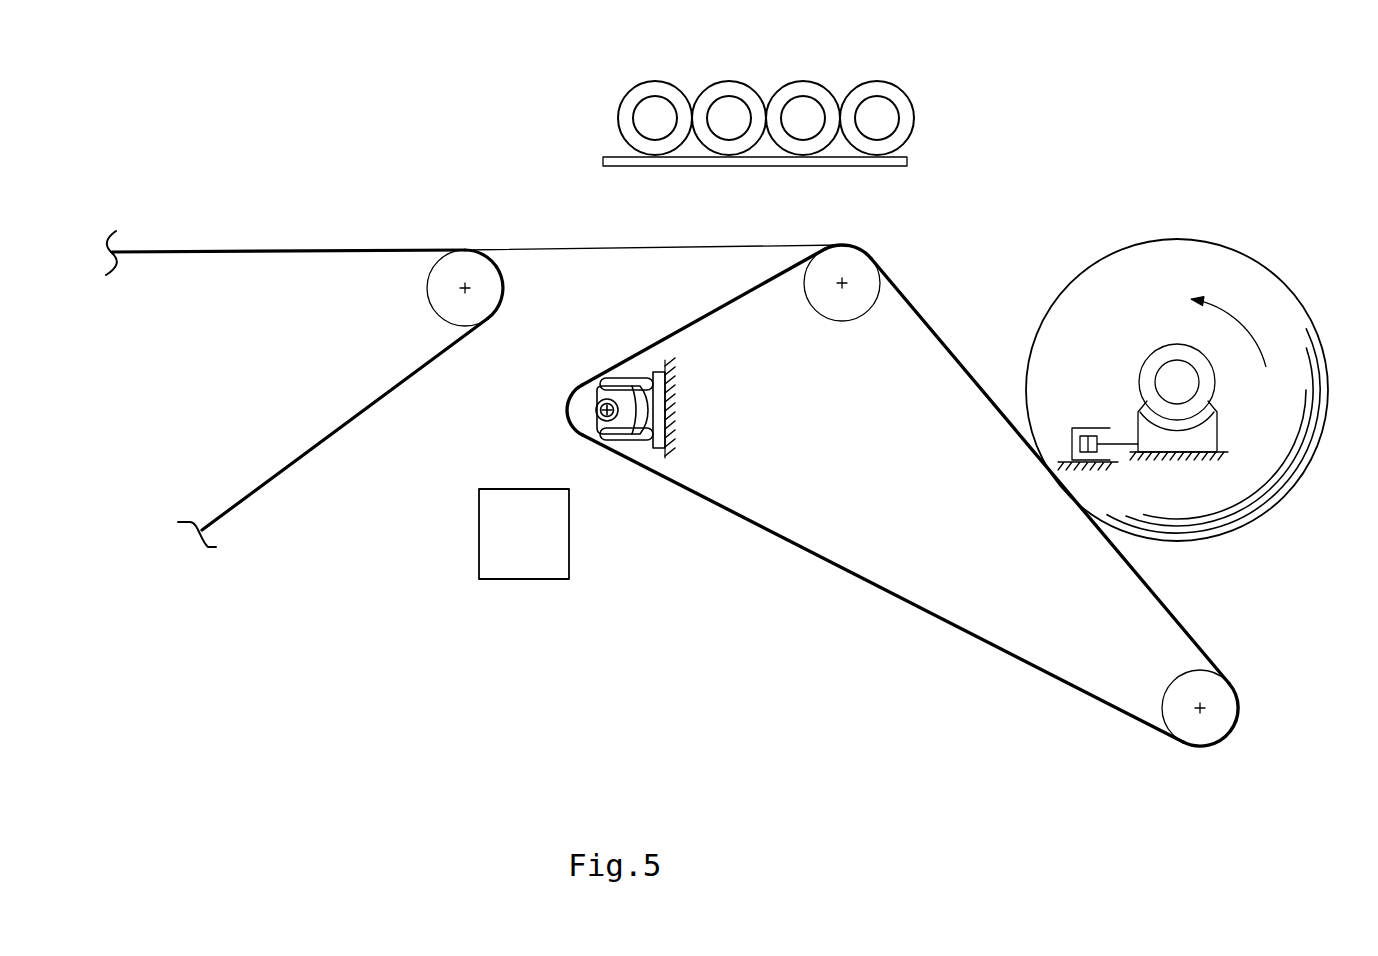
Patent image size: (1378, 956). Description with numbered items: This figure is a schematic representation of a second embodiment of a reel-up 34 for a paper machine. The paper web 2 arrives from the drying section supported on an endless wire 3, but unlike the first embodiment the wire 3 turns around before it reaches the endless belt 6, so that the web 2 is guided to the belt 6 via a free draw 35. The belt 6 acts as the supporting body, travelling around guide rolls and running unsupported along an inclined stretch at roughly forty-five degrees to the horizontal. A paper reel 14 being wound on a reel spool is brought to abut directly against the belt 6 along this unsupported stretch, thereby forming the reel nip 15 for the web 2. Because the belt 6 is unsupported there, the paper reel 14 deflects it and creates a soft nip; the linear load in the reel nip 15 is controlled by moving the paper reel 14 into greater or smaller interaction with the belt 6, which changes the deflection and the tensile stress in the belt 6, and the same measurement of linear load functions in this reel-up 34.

The paper web 2 is at (609, 249).
The wire 3 is at (247, 255).
The belt 6 is at (892, 592).
The paper reel 14 is at (1307, 467).
The reel nip 15 is at (1018, 421).
The reel-up 34 is at (627, 700).
The free draw 35 is at (602, 223).